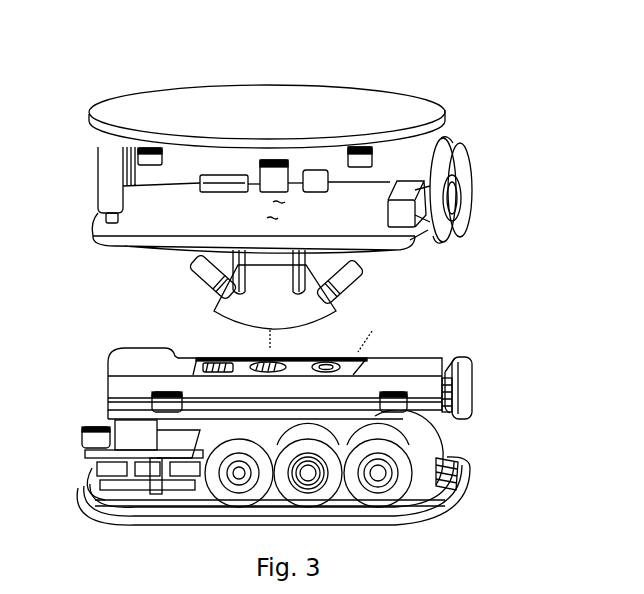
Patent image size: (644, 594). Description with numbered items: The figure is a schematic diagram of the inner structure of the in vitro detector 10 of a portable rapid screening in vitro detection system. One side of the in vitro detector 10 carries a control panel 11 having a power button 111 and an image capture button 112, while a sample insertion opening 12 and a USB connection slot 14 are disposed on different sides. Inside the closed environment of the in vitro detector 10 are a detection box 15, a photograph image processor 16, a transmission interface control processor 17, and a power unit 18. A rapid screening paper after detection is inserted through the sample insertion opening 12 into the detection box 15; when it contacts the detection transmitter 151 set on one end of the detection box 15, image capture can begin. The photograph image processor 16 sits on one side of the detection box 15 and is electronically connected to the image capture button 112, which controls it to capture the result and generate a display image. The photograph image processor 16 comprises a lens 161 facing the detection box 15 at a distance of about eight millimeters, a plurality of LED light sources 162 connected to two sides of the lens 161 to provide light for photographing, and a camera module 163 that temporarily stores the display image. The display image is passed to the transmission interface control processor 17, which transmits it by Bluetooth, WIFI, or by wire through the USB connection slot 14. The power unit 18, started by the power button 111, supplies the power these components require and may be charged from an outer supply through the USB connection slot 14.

The in vitro detector 10 is at (75, 26).
The control panel 11 is at (468, 180).
The power button 111 is at (479, 181).
The image capture button 112 is at (466, 212).
The sample insertion opening 12 is at (456, 353).
The USB connection slot 14 is at (64, 433).
The detection box 15 is at (235, 379).
The detection transmitter 151 is at (166, 351).
The photograph image processor 16 is at (67, 170).
The lens 161 is at (270, 292).
The LED light sources 162 is at (208, 289).
The camera module 163 is at (168, 235).
The transmission interface control processor 17 is at (285, 80).
The power unit 18 is at (478, 462).